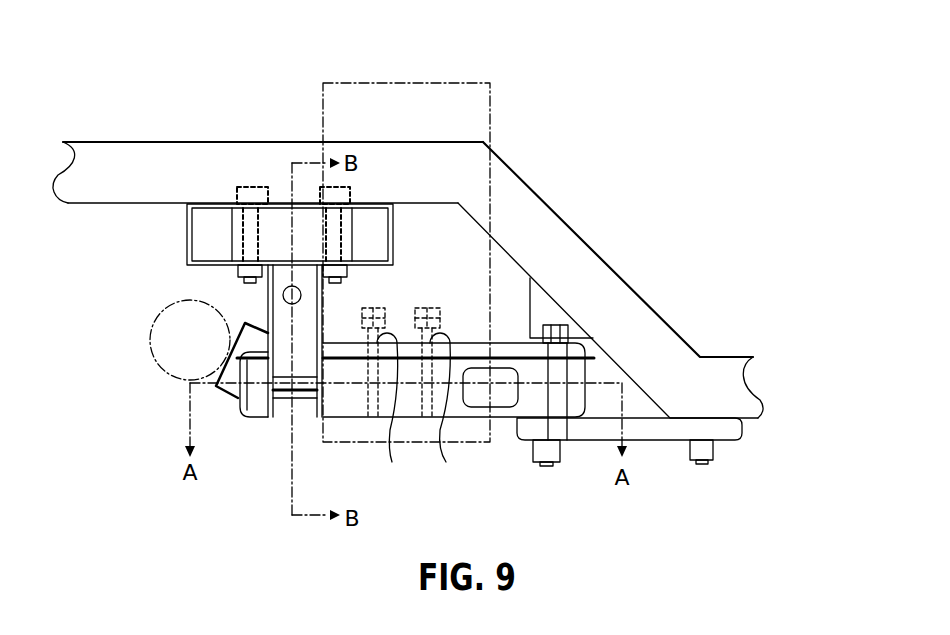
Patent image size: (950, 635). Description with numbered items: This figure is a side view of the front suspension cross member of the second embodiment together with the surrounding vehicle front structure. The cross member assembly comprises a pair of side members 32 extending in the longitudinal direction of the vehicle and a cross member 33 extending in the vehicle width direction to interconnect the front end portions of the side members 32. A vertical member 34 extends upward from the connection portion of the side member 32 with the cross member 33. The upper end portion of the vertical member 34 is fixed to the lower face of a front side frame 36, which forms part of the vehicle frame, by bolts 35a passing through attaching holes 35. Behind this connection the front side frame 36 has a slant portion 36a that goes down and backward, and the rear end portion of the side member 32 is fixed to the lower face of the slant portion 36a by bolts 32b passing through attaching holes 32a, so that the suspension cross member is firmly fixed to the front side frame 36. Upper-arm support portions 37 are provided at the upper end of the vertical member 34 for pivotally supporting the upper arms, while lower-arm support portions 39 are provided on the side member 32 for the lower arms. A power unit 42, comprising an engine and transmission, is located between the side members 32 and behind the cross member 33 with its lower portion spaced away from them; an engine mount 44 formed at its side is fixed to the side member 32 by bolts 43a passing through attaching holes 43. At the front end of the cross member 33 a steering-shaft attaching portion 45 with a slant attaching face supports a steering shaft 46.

The side member 32 is at (358, 418).
The attaching hole 32a is at (572, 330).
The bolt 32b is at (567, 335).
The cross member 33 is at (246, 412).
The vertical member 34 is at (267, 303).
The attaching hole 35 is at (232, 203).
The bolt 35a is at (237, 187).
The front side frame 36 is at (259, 141).
The slant portion 36a is at (553, 205).
The upper-arm support portion 37 is at (203, 237).
The lower-arm support portion 39 is at (289, 410).
The power unit 42 is at (373, 83).
The attaching hole 43 is at (420, 417).
The bolt 43a is at (383, 313).
The engine mount 44 is at (405, 308).
The steering-shaft attaching portion 45 is at (232, 350).
The steering shaft 46 is at (150, 347).